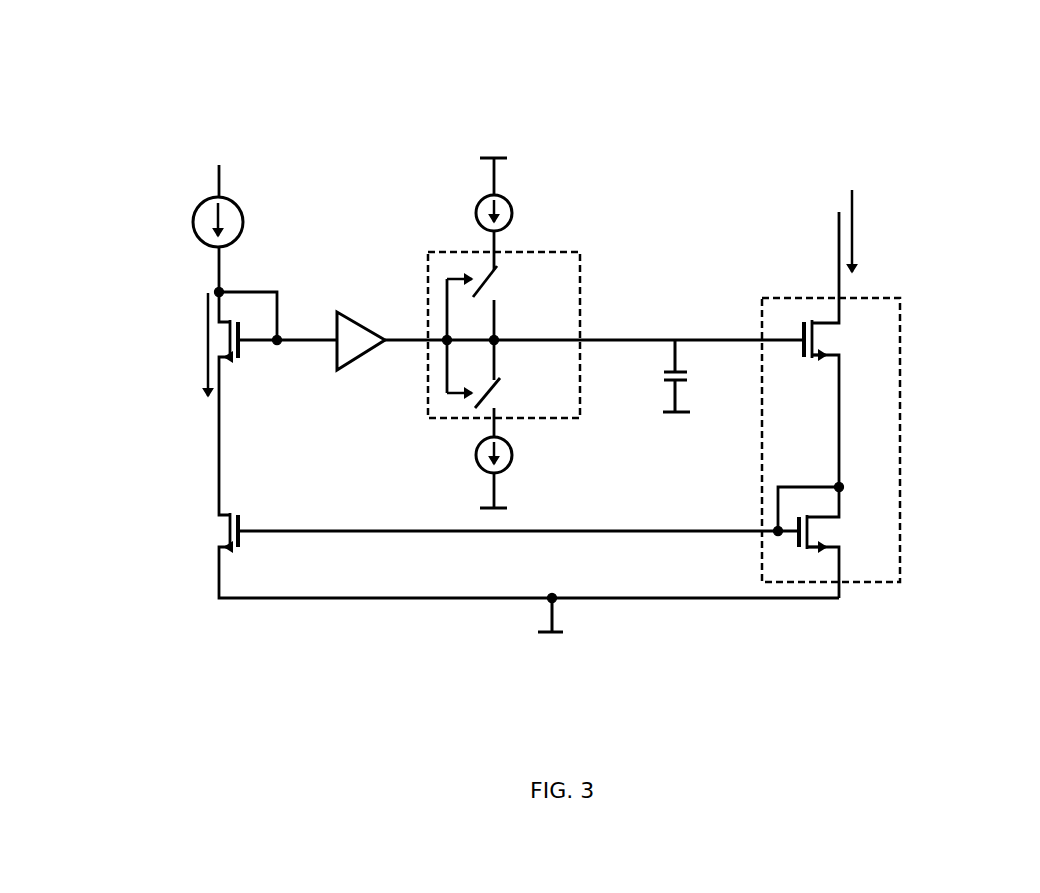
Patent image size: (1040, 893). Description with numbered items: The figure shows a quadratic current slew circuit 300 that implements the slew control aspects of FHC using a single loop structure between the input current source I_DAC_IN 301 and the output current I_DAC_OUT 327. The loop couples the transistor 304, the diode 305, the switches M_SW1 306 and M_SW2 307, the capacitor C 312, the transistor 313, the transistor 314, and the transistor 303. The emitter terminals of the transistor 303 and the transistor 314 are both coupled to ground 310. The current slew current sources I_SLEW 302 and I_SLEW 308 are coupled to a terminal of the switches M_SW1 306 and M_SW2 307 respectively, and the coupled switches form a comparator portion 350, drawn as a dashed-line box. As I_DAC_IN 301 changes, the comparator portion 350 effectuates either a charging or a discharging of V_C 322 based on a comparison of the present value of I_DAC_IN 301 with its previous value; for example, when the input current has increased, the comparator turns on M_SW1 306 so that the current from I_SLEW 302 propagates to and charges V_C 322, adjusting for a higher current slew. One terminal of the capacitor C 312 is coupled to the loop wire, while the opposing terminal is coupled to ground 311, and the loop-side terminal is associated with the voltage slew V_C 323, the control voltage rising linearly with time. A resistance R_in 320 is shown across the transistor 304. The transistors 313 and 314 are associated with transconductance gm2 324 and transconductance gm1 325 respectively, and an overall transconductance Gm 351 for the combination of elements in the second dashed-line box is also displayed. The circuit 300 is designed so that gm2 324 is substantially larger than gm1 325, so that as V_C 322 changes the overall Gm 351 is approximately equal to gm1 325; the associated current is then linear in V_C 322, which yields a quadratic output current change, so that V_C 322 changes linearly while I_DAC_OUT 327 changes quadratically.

The quadratic current slew circuit 300 is at (118, 103).
The I_DAC_IN 301 is at (195, 207).
The I_SLEW current source 302 is at (478, 197).
The transistor 303 is at (239, 513).
The transistor 304 is at (243, 352).
The diode 305 is at (338, 312).
The switch M_SW1 306 is at (480, 277).
The switch M_SW2 307 is at (496, 384).
The I_SLEW current source 308 is at (476, 453).
The ground 310 is at (565, 632).
The ground 311 is at (660, 412).
The capacitor C 312 is at (660, 384).
The transistor 313 is at (800, 330).
The transistor 314 is at (795, 538).
The resistance R_in 320 is at (160, 295).
The V_C 322 is at (562, 300).
The voltage slew V_C 323 is at (658, 298).
The transconductance gm2 324 is at (887, 339).
The transconductance gm1 325 is at (882, 514).
The I_DAC_OUT 327 is at (869, 207).
The comparator portion 350 is at (427, 289).
The overall transconductance Gm 351 is at (952, 404).